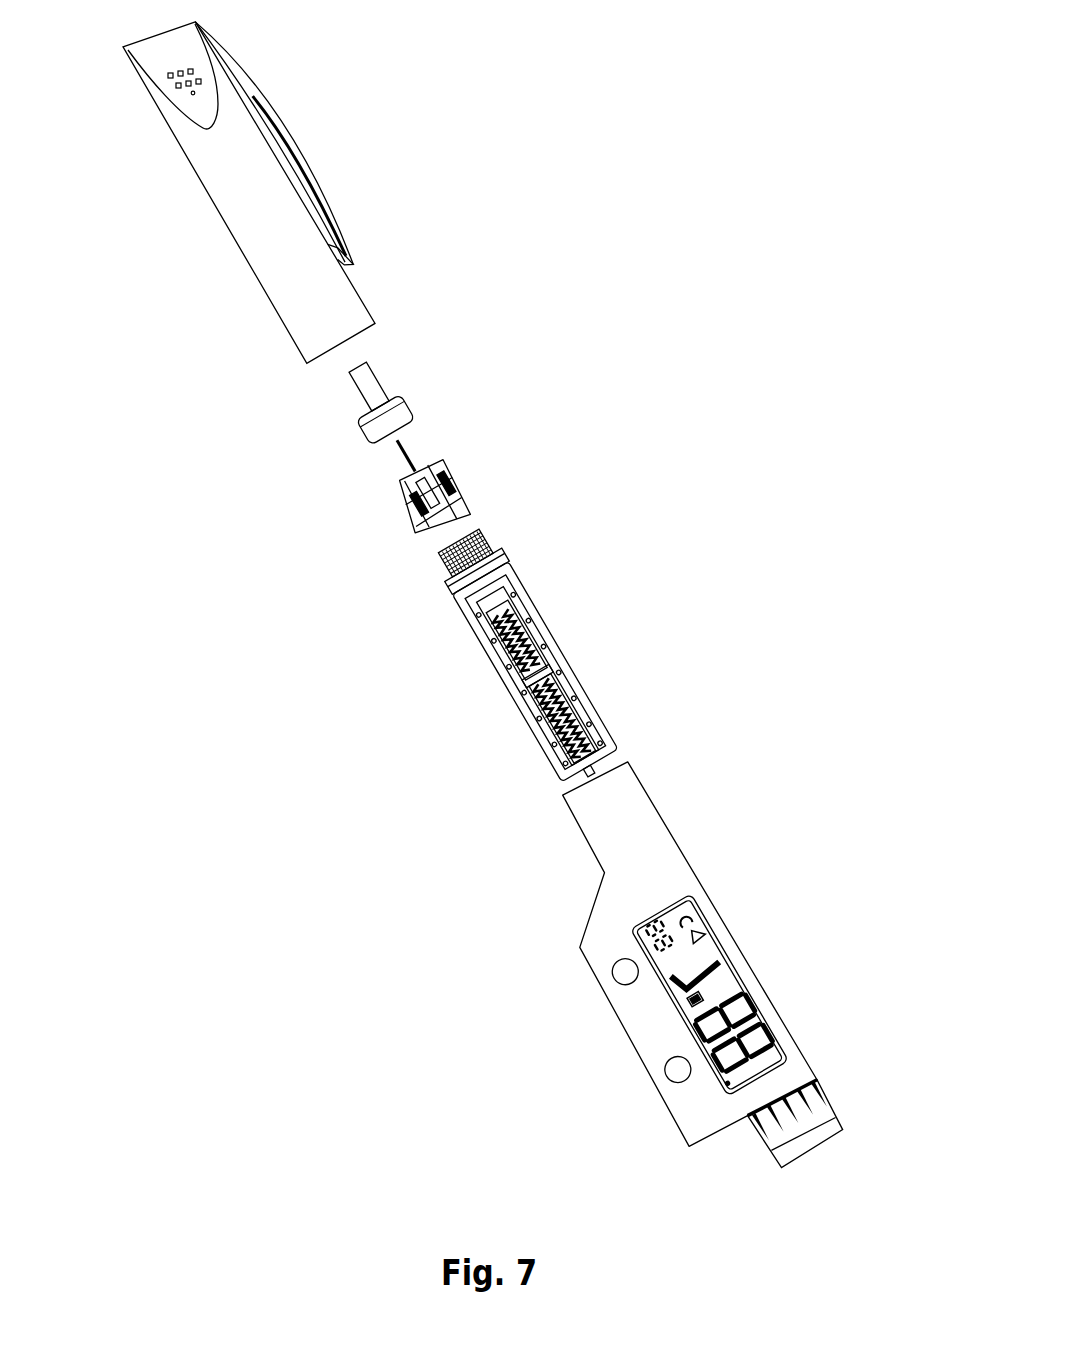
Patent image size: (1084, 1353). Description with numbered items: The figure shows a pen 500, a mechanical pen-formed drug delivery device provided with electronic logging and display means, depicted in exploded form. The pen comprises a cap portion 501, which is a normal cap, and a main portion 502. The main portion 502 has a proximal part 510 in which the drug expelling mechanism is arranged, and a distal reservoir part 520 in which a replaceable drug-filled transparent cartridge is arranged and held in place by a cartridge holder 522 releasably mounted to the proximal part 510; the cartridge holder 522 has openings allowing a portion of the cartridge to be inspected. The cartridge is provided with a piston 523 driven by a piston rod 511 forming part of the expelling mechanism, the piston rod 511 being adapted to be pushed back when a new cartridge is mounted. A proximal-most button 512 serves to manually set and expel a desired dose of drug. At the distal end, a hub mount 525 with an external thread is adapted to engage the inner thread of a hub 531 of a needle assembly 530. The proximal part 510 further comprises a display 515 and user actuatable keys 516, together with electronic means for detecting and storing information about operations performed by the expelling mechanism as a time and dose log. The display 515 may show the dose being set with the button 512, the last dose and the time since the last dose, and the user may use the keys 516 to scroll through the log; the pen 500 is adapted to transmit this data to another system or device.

The pen 500 is at (730, 223).
The cap portion 501 is at (355, 187).
The main portion 502 is at (689, 688).
The proximal part 510 is at (757, 968).
The piston rod 511 is at (560, 740).
The button 512 is at (760, 1148).
The display 515 is at (675, 1017).
The user actuatable keys 516 is at (620, 975).
The distal reservoir part 520 is at (549, 626).
The cartridge holder 522 is at (517, 685).
The piston 523 is at (508, 612).
The hub mount 525 is at (442, 565).
The needle assembly 530 is at (458, 432).
The hub 531 is at (410, 510).